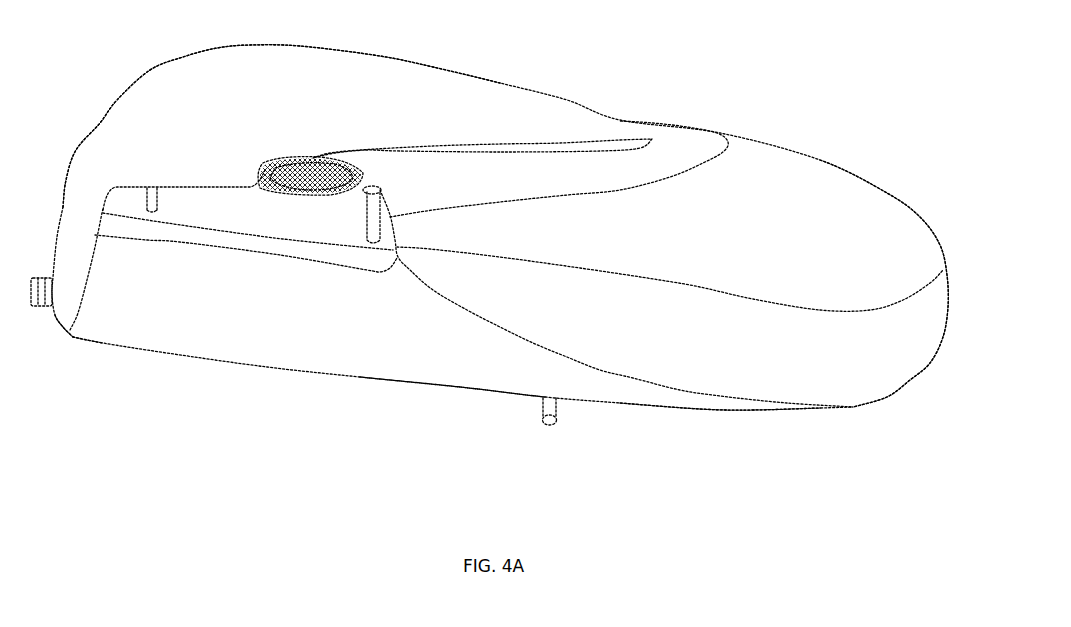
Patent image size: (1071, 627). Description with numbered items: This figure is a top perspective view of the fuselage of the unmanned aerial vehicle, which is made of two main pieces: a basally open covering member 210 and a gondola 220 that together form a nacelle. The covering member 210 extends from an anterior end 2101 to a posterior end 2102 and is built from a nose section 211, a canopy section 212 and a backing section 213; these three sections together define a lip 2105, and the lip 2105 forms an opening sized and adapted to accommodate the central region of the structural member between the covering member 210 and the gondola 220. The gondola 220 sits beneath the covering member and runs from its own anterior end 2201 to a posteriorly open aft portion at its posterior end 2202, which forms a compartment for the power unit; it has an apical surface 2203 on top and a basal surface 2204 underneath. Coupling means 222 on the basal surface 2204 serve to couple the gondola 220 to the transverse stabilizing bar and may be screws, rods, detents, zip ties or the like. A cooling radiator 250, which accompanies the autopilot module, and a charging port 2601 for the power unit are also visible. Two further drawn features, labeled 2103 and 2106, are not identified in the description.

The basally open covering member 210 is at (667, 147).
The nose section 211 is at (907, 257).
The canopy section 212 is at (485, 102).
The backing section 213 is at (112, 118).
The gondola 220 is at (305, 338).
The coupling means 222 is at (543, 420).
The cooling radiator 250 is at (268, 187).
The anterior end 2101 is at (913, 360).
The posterior end 2102 is at (67, 223).
The top wall of upper housing 2103 is at (308, 68).
The lip 2105 is at (185, 187).
The button hole 2106 is at (323, 167).
The anterior end 2201 is at (753, 410).
The posterior end 2202 is at (67, 325).
The apical surface 2203 is at (207, 220).
The basal surface 2204 is at (463, 387).
The charging port 2601 is at (47, 285).